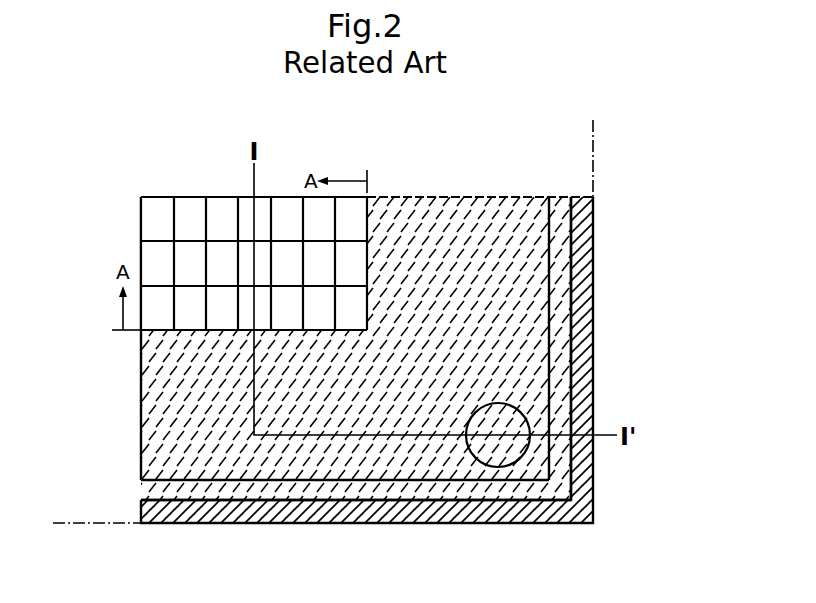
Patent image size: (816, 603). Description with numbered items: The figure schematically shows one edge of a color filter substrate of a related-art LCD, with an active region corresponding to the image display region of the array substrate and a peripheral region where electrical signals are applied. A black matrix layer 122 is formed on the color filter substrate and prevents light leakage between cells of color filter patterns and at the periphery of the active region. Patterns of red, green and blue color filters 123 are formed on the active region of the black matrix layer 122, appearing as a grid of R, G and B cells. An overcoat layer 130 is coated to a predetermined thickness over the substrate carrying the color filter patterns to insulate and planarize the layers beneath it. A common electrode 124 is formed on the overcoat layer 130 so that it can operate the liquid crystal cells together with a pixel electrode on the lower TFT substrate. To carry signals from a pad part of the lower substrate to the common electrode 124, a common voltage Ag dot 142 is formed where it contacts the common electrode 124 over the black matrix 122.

The black matrix layer 122 is at (586, 241).
The overcoat layer 130 is at (560, 291).
The common electrode 124 is at (530, 364).
The red, green and blue color filters 123 is at (180, 248).
The common voltage (Vcom) Ag dot 142 is at (498, 456).